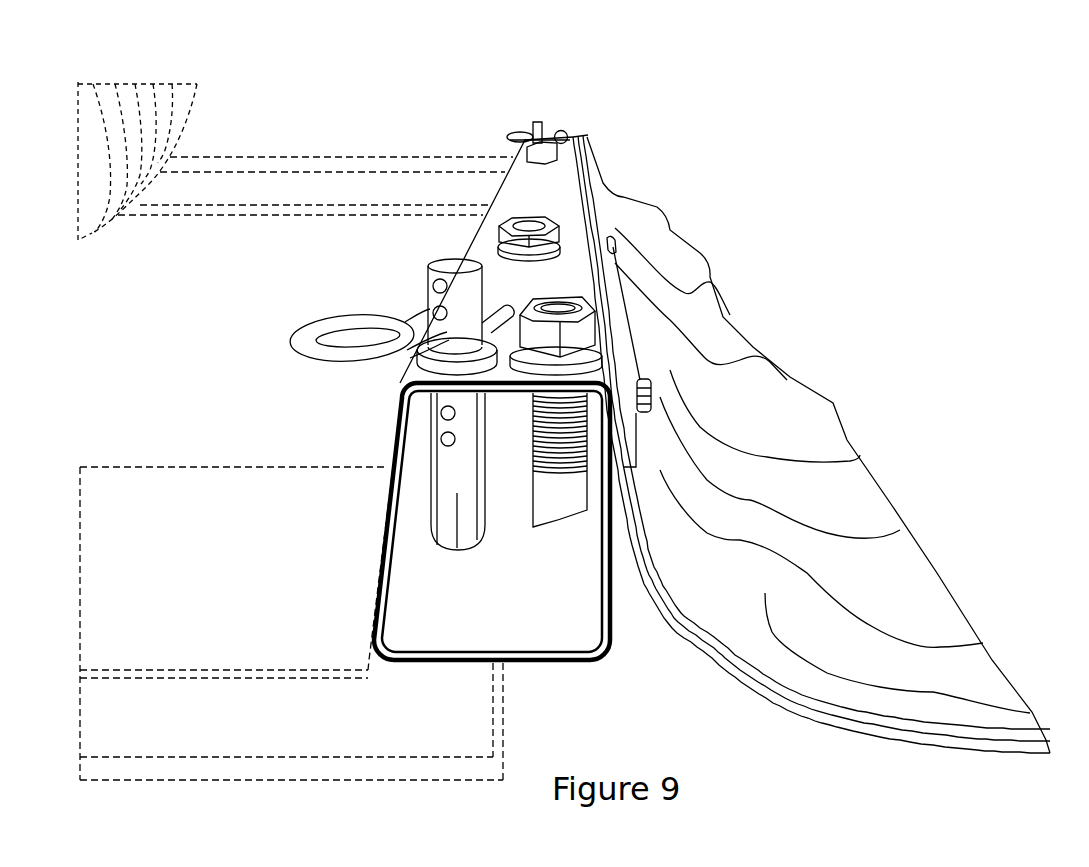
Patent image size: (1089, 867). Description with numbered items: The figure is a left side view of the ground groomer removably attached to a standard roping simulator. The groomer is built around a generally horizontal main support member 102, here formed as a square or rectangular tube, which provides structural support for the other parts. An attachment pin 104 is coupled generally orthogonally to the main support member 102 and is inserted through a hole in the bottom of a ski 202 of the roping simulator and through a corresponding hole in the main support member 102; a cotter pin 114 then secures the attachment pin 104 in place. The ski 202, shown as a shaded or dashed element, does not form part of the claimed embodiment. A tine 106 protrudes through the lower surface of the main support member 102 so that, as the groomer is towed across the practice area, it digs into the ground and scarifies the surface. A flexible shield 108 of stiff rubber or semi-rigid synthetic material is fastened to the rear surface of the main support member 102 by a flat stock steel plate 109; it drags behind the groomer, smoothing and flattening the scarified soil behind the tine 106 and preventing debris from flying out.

The main support member 102 is at (540, 650).
The attachment pin 104 is at (437, 260).
The tine 106 is at (615, 388).
The flexible shield 108 is at (867, 500).
The flat stock steel plate 109 is at (627, 420).
The cotter pin 114 is at (300, 337).
The ski 202 is at (233, 190).